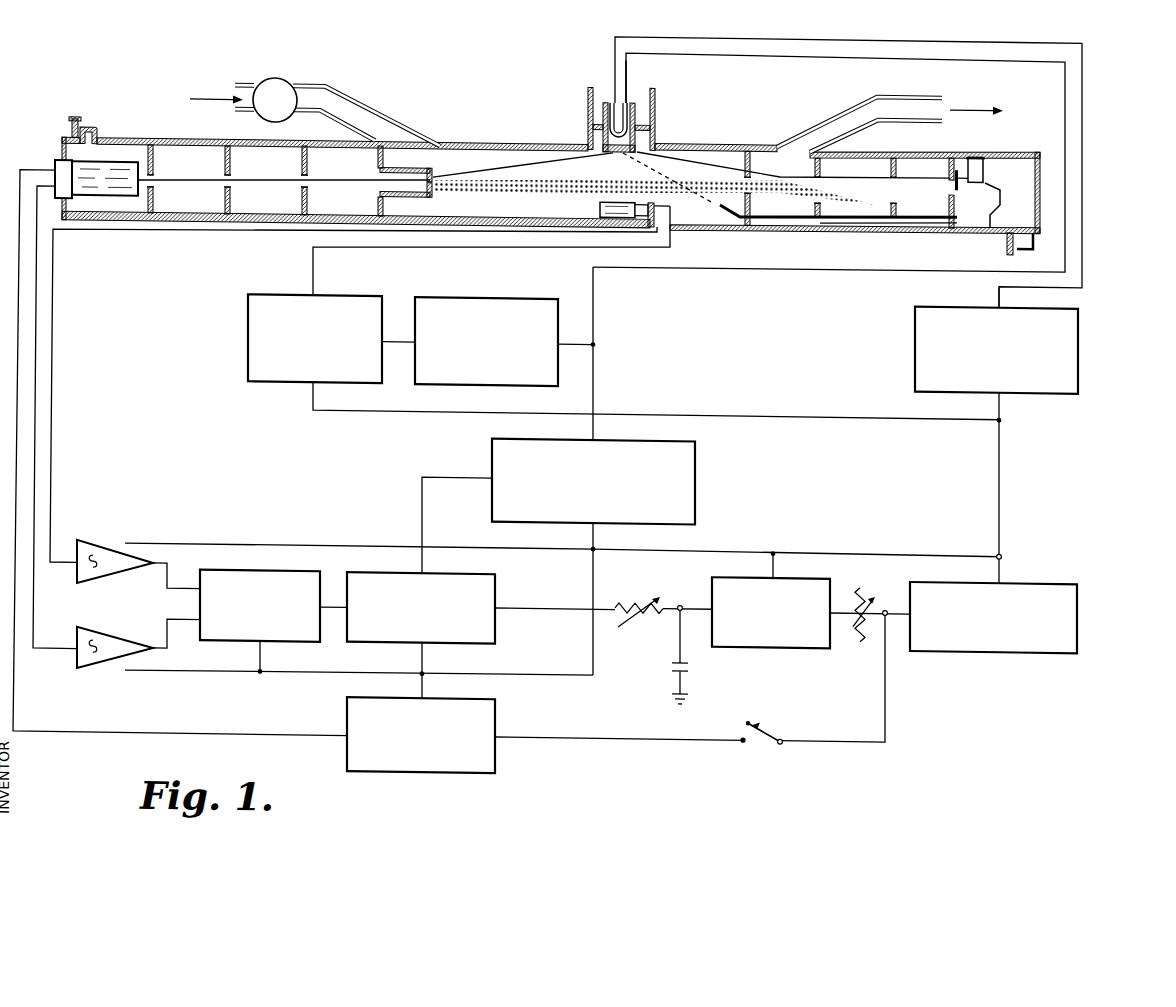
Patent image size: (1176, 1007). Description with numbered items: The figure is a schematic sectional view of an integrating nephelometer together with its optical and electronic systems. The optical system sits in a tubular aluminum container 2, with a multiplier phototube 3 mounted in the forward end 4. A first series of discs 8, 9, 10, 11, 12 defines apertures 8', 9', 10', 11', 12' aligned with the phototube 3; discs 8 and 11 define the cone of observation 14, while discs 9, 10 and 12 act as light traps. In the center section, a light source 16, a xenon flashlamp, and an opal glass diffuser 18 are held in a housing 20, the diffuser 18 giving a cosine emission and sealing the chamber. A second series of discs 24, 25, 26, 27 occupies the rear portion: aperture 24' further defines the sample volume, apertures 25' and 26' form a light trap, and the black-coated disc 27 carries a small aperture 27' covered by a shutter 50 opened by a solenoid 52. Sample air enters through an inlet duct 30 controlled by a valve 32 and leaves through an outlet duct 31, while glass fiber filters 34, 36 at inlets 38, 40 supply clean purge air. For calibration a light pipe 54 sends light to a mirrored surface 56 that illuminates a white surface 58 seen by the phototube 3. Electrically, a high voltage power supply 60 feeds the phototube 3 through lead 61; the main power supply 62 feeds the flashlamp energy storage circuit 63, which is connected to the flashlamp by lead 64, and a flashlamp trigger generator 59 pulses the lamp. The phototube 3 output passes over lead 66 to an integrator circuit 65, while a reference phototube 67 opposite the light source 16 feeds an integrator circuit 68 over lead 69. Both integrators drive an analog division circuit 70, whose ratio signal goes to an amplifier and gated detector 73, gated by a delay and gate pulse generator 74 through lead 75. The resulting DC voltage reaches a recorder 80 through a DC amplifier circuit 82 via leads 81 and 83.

The container 2 is at (514, 144).
The multiplier phototube 3 is at (105, 166).
The forward end 4 is at (62, 147).
The disc 8 is at (165, 159).
The aperture 8' is at (169, 171).
The disc 9 is at (238, 160).
The aperture 9' is at (246, 171).
The disc 10 is at (315, 161).
The aperture 10' is at (332, 171).
The disc 11 is at (409, 154).
The aperture 11' is at (424, 152).
The disc 12 is at (458, 147).
The aperture 12' is at (474, 157).
The cone of observation 14 is at (541, 185).
The light source 16 is at (609, 108).
The opal glass diffuser 18 is at (646, 148).
The housing 20 is at (631, 108).
The disc 24 is at (733, 167).
The aperture 24' is at (776, 169).
The disc 25 is at (855, 166).
The aperture 25' is at (849, 180).
The disc 26 is at (917, 166).
The aperture 26' is at (923, 180).
The disc 27 is at (969, 171).
The aperture 27' is at (935, 189).
The inlet duct 30 is at (242, 88).
The outlet duct 31 is at (880, 93).
The valve 32 is at (296, 88).
The glass fiber filter 34 is at (70, 126).
The glass fiber filter 36 is at (1016, 244).
The inlet 38 is at (93, 133).
The inlet 40 is at (1030, 227).
The shutter 50 is at (985, 176).
The solenoid 52 is at (984, 153).
The light pipe 54 is at (830, 228).
The mirrored surface 56 is at (993, 229).
The white surface 58 is at (992, 203).
The flashlamp trigger generator 59 is at (1079, 336).
The high voltage power supply 60 is at (496, 718).
The lead 61 is at (20, 365).
The main power supply 62 is at (340, 298).
The flashlamp energy storage circuit 63 is at (493, 299).
The lead 64 is at (595, 301).
The integrator circuit 65 is at (92, 676).
The lead 66 is at (37, 326).
The reference phototube 67 is at (620, 202).
The integrator circuit 68 is at (598, 213).
The lead 69 is at (54, 291).
The analog division circuit 70 is at (256, 575).
The amplifier and gated detector 73 is at (496, 582).
The delay and gate pulse generator 74 is at (696, 482).
The lead 75 is at (438, 480).
The recorder 80 is at (1060, 578).
The lead 81 is at (580, 608).
The DC amplifier circuit 82 is at (823, 578).
The lead 83 is at (862, 592).